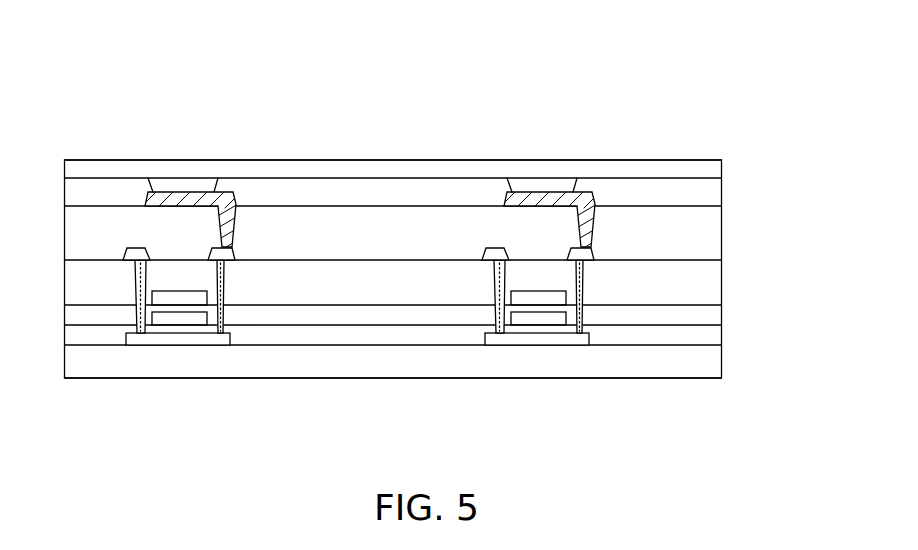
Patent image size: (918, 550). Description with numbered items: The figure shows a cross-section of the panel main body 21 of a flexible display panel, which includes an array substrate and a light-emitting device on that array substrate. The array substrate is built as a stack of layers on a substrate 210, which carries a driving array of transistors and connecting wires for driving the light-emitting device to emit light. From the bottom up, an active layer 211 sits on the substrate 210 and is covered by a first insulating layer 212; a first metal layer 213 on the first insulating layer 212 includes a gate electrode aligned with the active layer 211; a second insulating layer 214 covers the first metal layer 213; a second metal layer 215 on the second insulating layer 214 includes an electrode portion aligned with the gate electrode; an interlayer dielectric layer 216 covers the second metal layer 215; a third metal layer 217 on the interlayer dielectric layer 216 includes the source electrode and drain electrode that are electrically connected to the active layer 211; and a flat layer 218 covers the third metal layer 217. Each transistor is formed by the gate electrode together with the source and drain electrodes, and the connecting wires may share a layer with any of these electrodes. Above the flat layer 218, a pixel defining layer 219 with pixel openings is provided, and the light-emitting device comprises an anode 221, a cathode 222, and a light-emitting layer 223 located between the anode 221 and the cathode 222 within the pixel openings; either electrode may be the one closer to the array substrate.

The panel main body 21 is at (78, 48).
The substrate 210 is at (672, 373).
The active layer 211 is at (177, 340).
The first insulating layer 212 is at (692, 337).
The first metal layer 213 is at (553, 323).
The second insulating layer 214 is at (708, 322).
The second metal layer 215 is at (525, 298).
The interlayer dielectric layer 216 is at (698, 290).
The third metal layer 217 is at (220, 308).
The flat layer 218 is at (690, 235).
The pixel defining layer 219 is at (693, 199).
The anode 221 is at (228, 197).
The cathode 222 is at (102, 168).
The light-emitting layer 223 is at (170, 187).